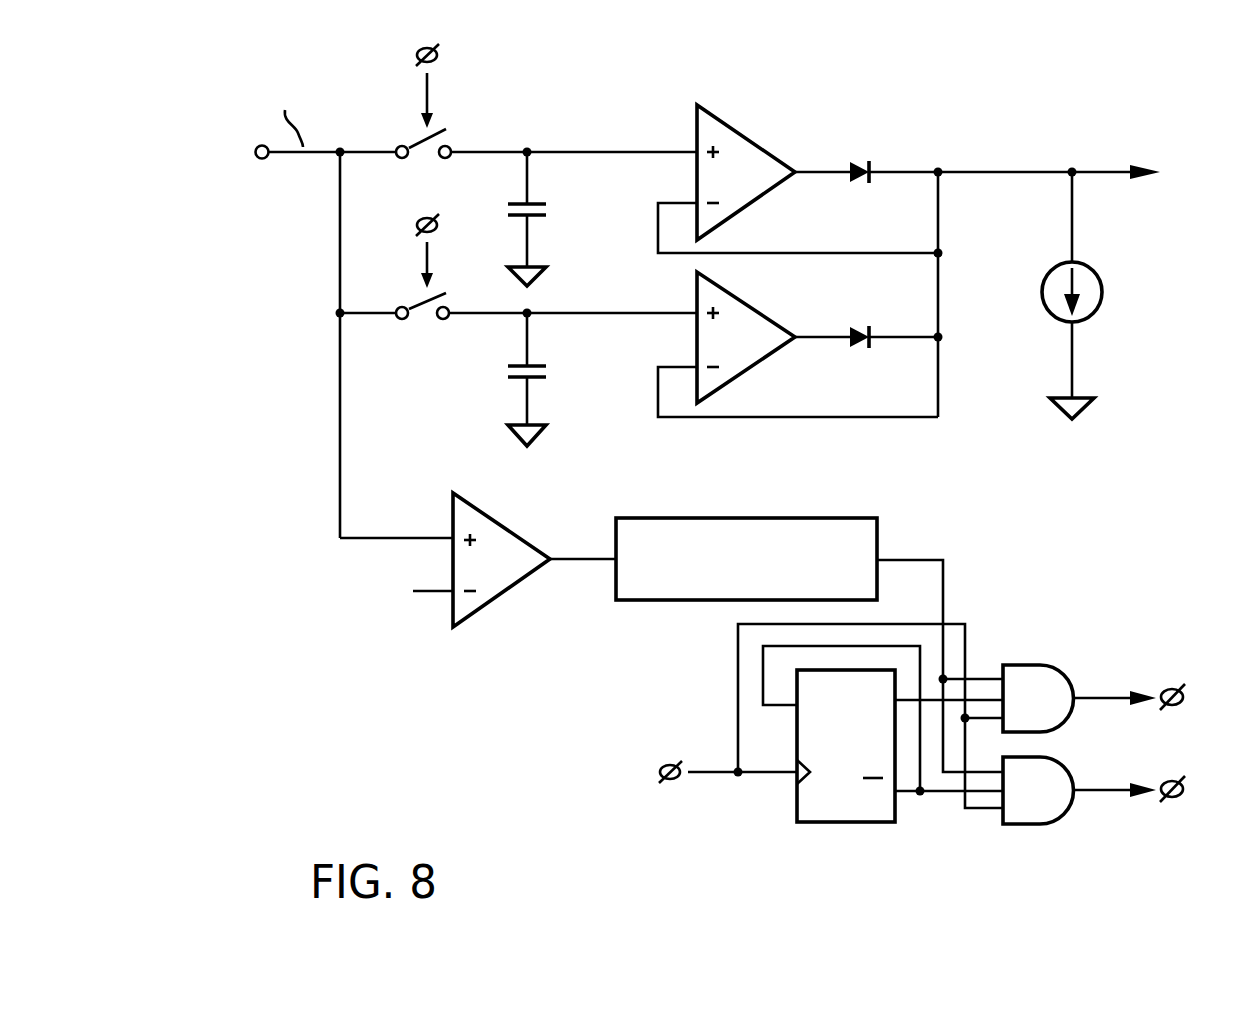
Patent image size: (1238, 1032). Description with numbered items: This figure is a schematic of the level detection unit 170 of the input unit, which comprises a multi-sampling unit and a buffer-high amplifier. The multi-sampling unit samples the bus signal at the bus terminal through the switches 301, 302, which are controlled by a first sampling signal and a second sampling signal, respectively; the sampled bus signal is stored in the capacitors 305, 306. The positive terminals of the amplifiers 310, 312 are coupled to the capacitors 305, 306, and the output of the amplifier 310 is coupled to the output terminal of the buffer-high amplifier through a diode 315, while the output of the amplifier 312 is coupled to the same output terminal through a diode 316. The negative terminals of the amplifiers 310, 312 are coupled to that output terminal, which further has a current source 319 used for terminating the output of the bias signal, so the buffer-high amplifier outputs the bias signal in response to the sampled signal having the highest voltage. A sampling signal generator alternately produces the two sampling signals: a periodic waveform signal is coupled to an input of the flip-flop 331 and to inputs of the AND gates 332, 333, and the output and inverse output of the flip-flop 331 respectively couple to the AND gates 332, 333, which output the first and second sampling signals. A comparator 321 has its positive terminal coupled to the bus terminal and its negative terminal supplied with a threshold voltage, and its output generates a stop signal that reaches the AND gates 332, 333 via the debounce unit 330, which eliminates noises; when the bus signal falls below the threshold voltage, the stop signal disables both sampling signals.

The level detection unit 170 is at (1197, 78).
The switch 301 is at (457, 140).
The switch 302 is at (418, 332).
The capacitor 305 is at (550, 210).
The capacitor 306 is at (552, 373).
The amplifier 310 is at (745, 130).
The amplifier 312 is at (750, 377).
The diode 315 is at (858, 157).
The diode 316 is at (858, 353).
The current source 319 is at (1105, 302).
The comparator 321 is at (508, 524).
The debounce unit 330 is at (880, 533).
The flip-flop 331 is at (860, 828).
The AND gate 332 is at (1033, 660).
The AND gate 333 is at (1033, 828).